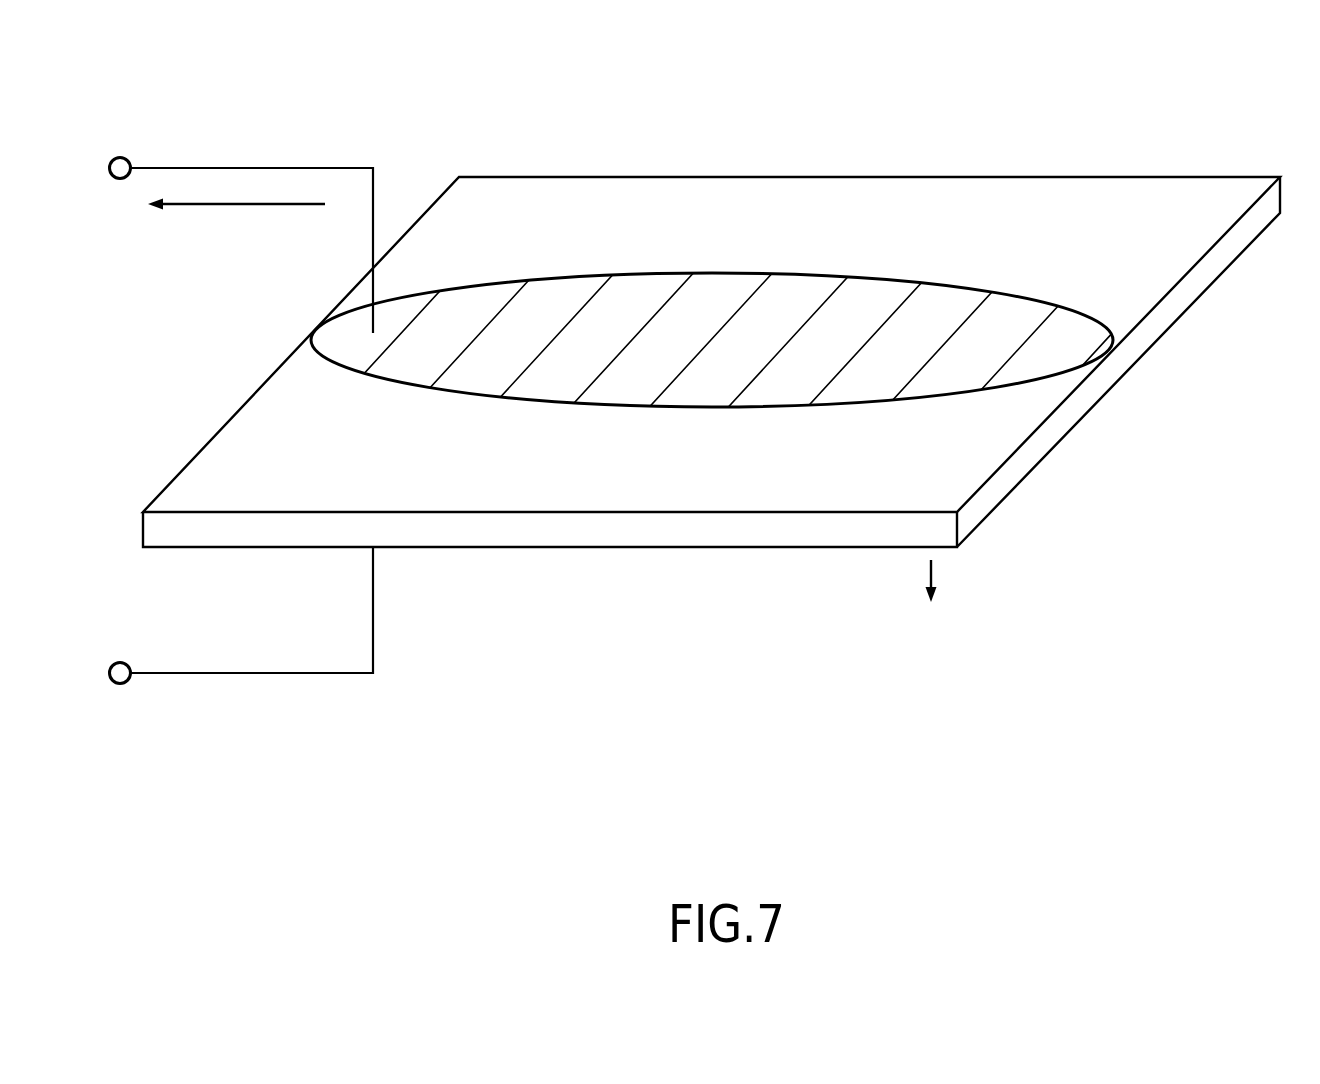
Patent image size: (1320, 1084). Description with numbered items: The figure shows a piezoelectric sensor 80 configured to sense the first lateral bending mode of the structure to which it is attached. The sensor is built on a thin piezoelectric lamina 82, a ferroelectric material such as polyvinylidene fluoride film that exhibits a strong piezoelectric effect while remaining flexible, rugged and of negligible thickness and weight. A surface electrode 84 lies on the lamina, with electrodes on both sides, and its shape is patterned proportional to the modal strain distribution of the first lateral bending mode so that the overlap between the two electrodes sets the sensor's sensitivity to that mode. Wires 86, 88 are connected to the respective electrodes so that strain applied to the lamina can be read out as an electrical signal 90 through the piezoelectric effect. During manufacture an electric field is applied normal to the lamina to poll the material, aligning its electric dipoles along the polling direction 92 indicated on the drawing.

The piezoelectric sensor 80 is at (695, 450).
The piezoelectric lamina 82 is at (1130, 202).
The surface electrode 84 is at (630, 268).
The wire 86 is at (243, 167).
The wire 88 is at (207, 675).
The electrical signal 90 is at (273, 205).
The polling direction 92 is at (931, 575).